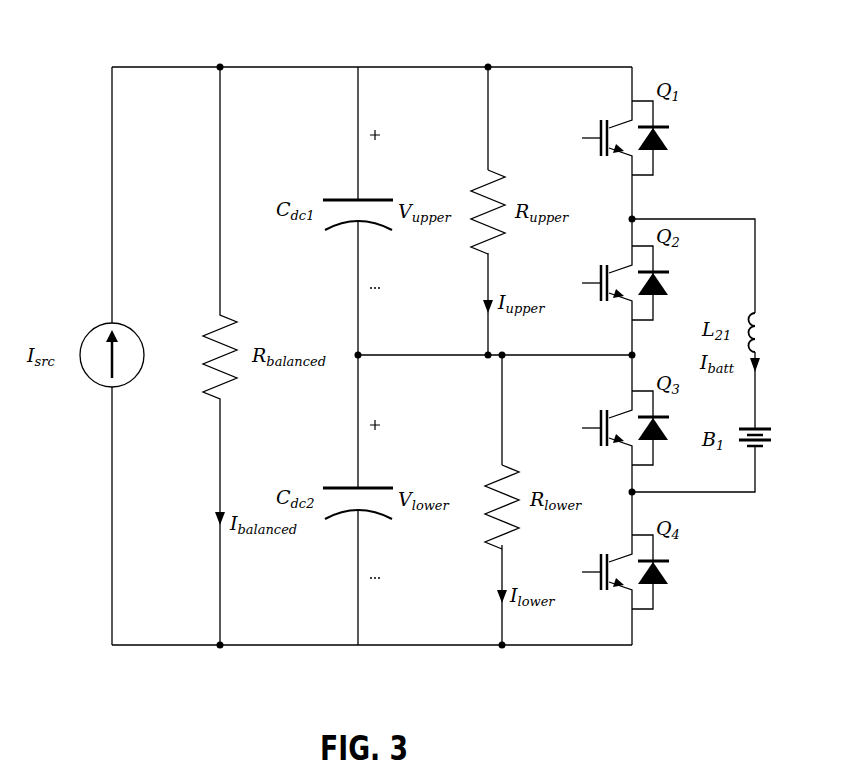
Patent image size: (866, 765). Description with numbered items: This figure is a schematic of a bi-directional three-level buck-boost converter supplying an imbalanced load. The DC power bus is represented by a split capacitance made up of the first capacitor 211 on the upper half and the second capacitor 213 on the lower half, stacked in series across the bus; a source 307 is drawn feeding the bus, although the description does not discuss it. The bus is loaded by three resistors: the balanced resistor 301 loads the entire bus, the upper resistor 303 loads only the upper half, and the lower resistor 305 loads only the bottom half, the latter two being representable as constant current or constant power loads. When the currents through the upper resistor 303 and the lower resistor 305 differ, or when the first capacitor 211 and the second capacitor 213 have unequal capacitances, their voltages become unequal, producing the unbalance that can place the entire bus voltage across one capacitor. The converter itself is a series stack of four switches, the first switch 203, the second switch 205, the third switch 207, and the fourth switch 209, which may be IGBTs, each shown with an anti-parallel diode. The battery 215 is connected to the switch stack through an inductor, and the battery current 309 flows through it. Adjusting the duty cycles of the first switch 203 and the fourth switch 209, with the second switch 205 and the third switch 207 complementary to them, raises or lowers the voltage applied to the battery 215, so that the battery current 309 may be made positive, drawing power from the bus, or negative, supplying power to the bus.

The switch Q1 203 is at (680, 83).
The switch Q2 205 is at (683, 220).
The switch Q3 207 is at (670, 367).
The switch Q4 209 is at (685, 543).
The capacitor Cdc1 211 is at (327, 188).
The capacitor Cdc2 213 is at (347, 478).
The battery 215 is at (778, 437).
The resistor Rbalanced 301 is at (213, 313).
The resistor Rupper 303 is at (465, 175).
The resistor Rlower 305 is at (487, 468).
The current source 307 is at (93, 323).
The battery current Ibatt 309 is at (765, 357).